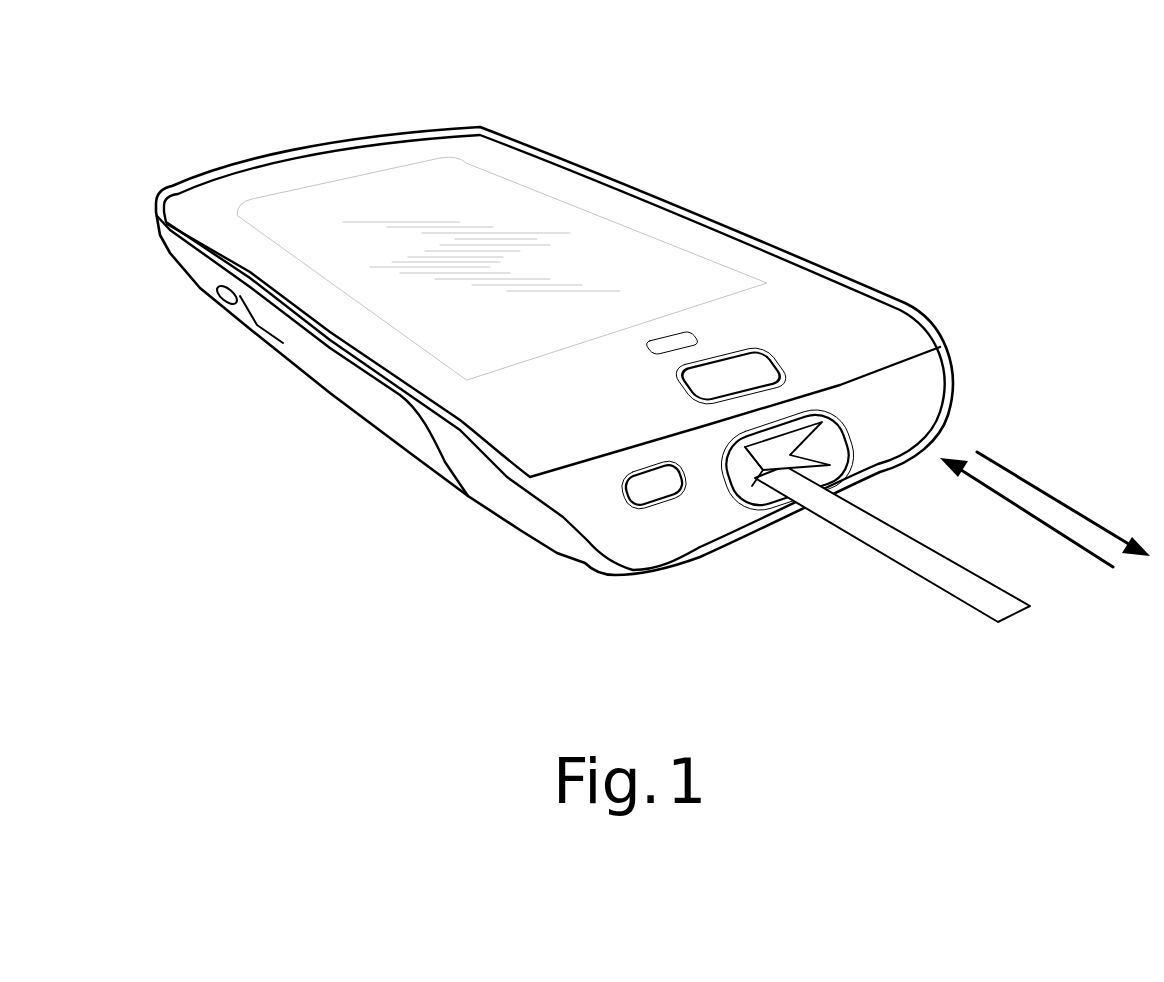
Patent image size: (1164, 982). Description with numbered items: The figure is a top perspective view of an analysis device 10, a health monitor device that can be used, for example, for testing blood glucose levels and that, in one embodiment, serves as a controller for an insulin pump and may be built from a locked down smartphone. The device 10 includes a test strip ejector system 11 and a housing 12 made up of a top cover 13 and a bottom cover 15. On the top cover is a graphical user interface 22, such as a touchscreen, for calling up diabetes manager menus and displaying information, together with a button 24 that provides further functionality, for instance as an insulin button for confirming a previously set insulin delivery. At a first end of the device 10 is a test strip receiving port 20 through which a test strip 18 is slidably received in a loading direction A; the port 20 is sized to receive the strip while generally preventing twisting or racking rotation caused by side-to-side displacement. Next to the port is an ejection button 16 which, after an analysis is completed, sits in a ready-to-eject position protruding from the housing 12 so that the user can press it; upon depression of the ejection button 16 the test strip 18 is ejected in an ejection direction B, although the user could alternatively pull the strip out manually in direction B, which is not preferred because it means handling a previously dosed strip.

The analysis device 10 is at (830, 157).
The test strip ejector system 11 is at (983, 388).
The housing 12 is at (527, 495).
The top cover 13 is at (893, 337).
The bottom cover 15 is at (592, 560).
The ejection button 16 is at (650, 495).
The test strip 18 is at (1003, 607).
The test strip receiving port 20 is at (773, 489).
The graphical user interface 22 is at (592, 243).
The button 24 is at (707, 385).
The loading direction A is at (1036, 515).
The ejection direction B is at (1056, 497).